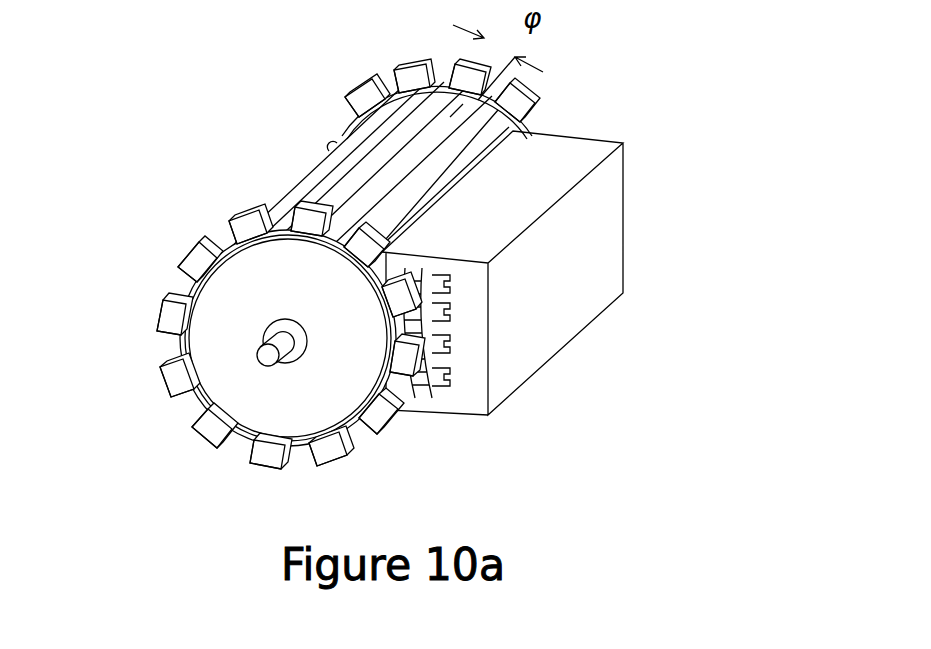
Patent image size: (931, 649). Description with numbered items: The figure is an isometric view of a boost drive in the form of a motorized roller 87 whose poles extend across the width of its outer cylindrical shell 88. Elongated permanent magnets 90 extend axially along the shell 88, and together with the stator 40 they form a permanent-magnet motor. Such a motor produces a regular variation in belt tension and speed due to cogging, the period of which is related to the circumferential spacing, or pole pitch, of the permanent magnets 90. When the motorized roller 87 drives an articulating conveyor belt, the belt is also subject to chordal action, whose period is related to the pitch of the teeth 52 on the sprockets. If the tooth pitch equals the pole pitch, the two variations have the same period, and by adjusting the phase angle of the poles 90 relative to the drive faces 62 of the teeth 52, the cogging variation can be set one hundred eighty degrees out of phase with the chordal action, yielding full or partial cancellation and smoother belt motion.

The stator 40 is at (537, 357).
The teeth 52 is at (390, 414).
The drive faces 62 is at (455, 62).
The motorized roller 87 is at (200, 342).
The outer cylindrical shell 88 is at (300, 180).
The permanent magnets 90 is at (350, 147).